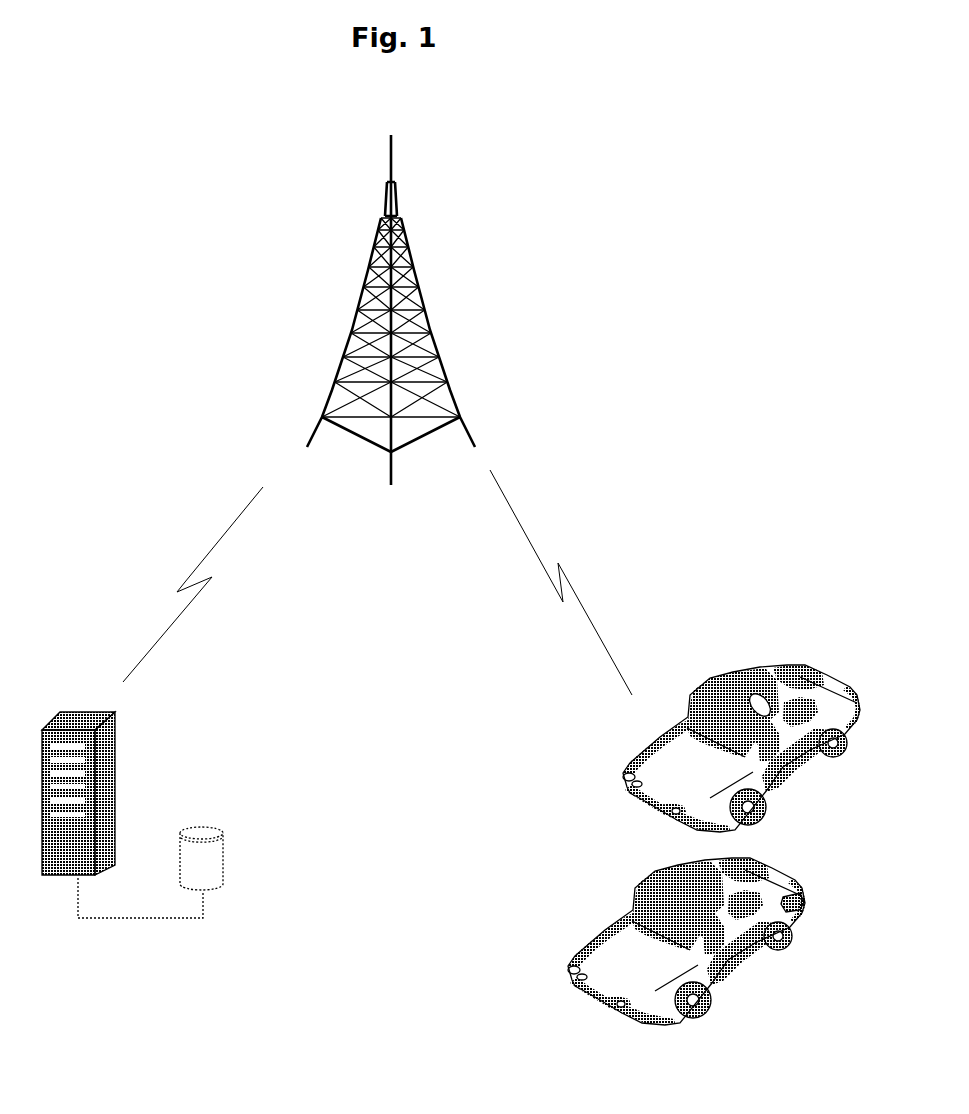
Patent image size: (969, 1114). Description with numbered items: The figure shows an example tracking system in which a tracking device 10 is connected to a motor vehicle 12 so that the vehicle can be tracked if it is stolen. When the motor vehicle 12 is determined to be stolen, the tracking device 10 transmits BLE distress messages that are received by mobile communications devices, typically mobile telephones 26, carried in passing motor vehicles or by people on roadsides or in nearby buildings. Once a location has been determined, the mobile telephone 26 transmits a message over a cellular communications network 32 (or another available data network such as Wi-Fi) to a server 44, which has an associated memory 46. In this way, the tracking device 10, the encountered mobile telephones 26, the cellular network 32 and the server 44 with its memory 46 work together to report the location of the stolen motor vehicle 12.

The tracking device 10 is at (805, 900).
The motor vehicle 12 is at (696, 929).
The mobile telephone 26 is at (813, 763).
The cellular communications network 32 is at (366, 249).
The server 44 is at (105, 793).
The memory 46 is at (228, 857).